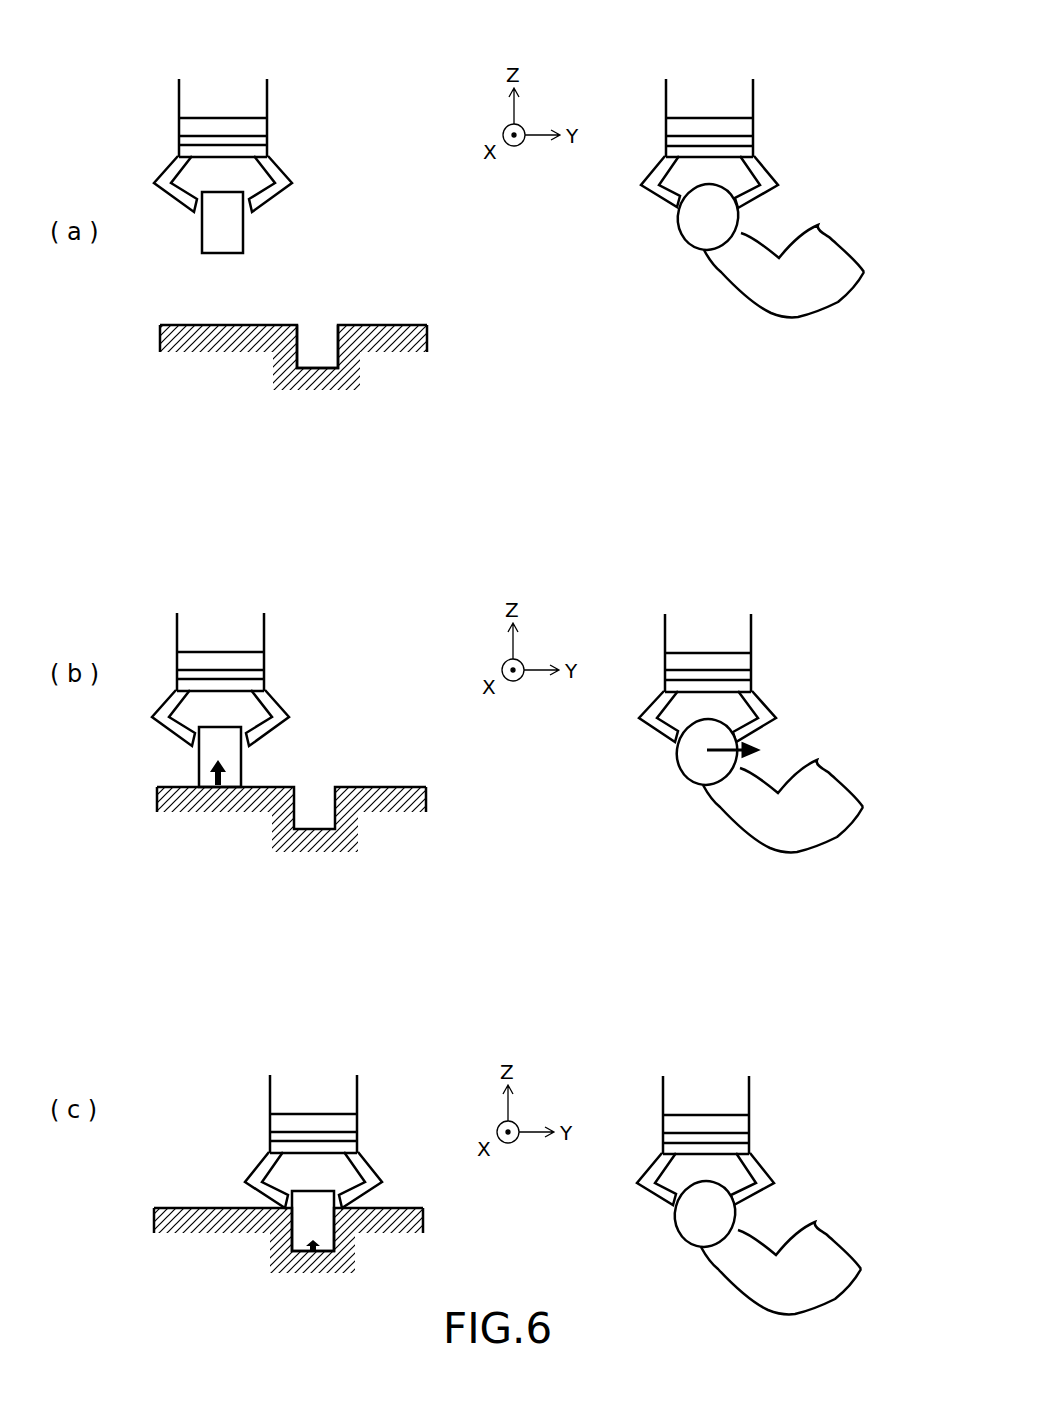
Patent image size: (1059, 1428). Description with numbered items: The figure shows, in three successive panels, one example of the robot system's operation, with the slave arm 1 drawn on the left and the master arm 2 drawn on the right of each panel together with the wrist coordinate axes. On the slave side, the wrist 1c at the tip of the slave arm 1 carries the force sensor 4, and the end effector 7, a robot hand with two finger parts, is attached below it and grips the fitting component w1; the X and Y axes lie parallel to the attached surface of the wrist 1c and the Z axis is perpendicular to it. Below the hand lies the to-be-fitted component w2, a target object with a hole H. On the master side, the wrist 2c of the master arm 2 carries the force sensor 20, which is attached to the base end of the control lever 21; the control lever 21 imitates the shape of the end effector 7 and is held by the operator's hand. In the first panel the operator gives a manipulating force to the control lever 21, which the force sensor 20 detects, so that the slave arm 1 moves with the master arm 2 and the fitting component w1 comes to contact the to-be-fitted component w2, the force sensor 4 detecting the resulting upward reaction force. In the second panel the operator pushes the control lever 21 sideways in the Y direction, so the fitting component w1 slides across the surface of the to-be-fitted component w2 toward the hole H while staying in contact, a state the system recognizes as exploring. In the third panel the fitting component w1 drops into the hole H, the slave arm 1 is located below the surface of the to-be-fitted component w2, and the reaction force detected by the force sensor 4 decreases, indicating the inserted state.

The slave arm 1 is at (297, 78).
The wrist 1c is at (267, 128).
The force sensor 4 is at (267, 143).
The end effector 7 is at (301, 183).
The fitting component w1 is at (243, 215).
The to-be-fitted component w2 is at (393, 325).
The hole H is at (326, 329).
The master arm 2 is at (784, 78).
The wrist 2c is at (753, 125).
The force sensor 20 is at (753, 140).
The control lever 21 is at (788, 185).